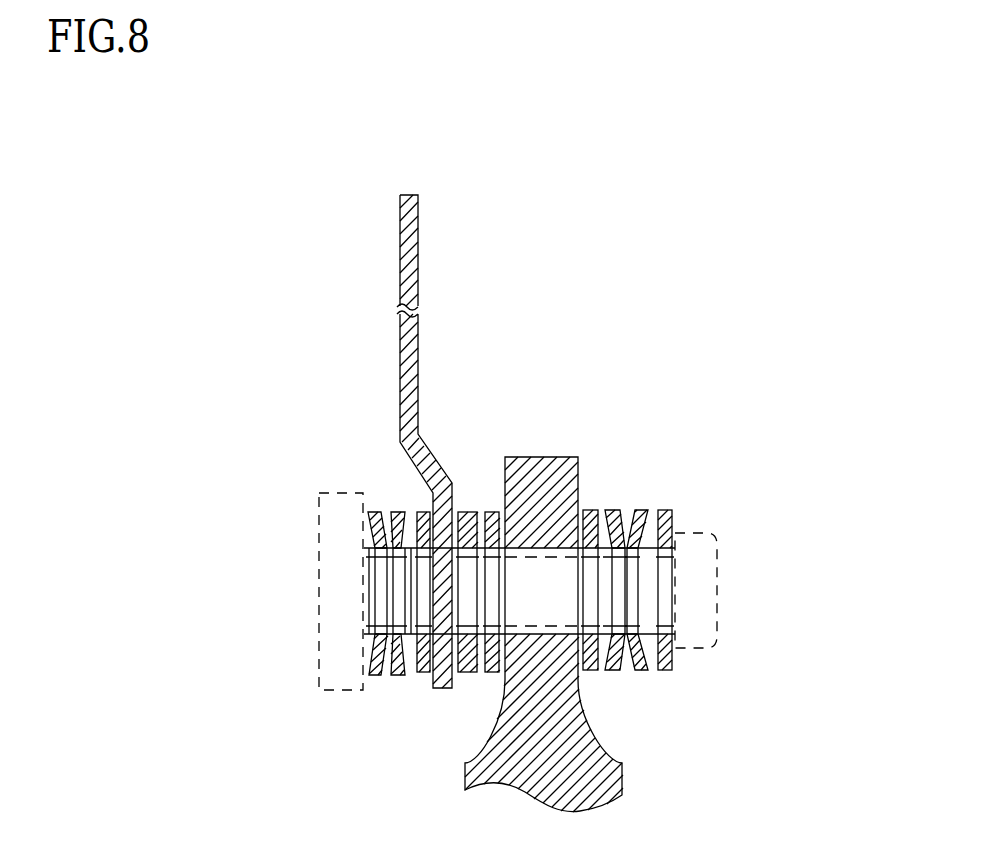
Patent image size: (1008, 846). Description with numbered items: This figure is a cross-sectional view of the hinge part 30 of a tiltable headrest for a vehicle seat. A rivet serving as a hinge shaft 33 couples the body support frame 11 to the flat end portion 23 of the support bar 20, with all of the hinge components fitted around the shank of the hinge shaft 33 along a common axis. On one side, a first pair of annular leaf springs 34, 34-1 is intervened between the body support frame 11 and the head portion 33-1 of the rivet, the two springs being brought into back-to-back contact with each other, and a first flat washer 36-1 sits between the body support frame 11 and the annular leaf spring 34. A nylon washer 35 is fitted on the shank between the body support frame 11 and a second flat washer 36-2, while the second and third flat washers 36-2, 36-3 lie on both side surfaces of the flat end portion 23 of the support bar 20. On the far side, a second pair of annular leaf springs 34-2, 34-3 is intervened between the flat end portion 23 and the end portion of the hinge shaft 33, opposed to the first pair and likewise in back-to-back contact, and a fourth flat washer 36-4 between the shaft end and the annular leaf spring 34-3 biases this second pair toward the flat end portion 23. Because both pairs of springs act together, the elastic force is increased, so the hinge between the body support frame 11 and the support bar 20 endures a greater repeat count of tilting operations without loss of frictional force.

The body support frame 11 is at (409, 196).
The support bar 20 is at (558, 764).
The flat end portion 23 is at (578, 473).
The hinge part 30 is at (782, 491).
The hinge shaft 33 is at (712, 588).
The head portion 33-1 is at (318, 493).
The annular leaf spring 34 is at (408, 675).
The annular leaf spring 34-1 is at (373, 675).
The annular leaf spring 34-2 is at (622, 513).
The annular leaf spring 34-3 is at (639, 668).
The nylon washer 35 is at (469, 511).
The first flat washer 36-1 is at (427, 512).
The second flat washer 36-2 is at (491, 510).
The third flat washer 36-3 is at (591, 510).
The fourth flat washer 36-4 is at (670, 657).